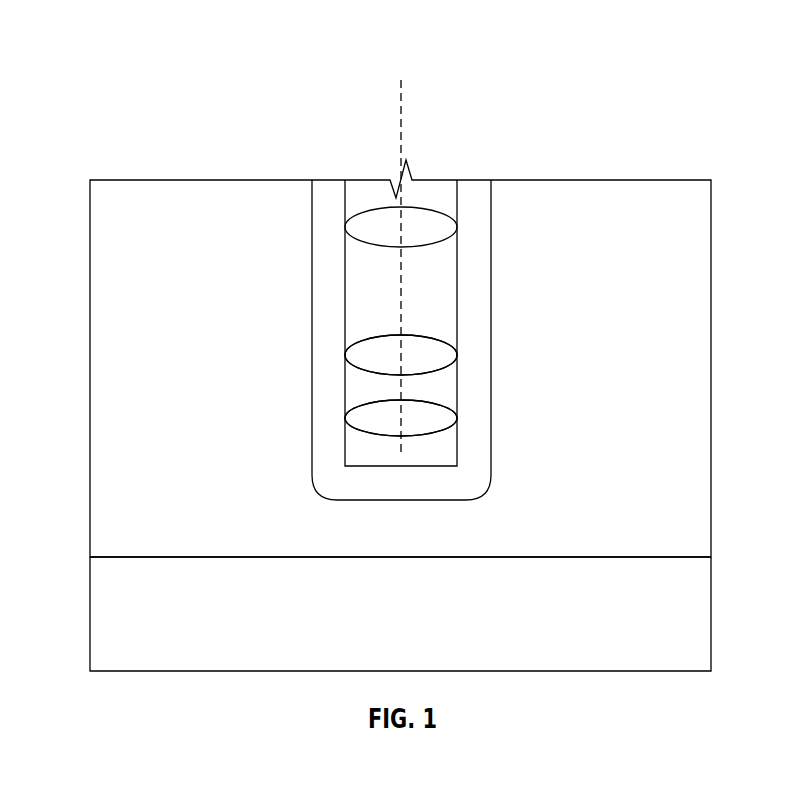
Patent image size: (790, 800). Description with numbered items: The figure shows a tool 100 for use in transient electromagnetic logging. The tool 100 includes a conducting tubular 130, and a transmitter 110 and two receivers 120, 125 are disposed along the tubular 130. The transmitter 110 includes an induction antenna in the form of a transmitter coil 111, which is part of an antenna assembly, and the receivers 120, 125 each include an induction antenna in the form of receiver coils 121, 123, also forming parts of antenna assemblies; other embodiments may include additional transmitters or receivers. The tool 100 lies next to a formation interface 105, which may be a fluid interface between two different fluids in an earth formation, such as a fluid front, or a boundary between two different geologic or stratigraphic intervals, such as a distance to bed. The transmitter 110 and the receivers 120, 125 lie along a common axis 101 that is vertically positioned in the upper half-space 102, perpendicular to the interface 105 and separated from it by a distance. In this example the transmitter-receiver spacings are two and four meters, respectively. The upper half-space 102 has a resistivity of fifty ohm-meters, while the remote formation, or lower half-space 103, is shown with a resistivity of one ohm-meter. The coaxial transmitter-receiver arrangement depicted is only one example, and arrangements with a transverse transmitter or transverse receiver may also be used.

The tool 100 is at (560, 207).
The common axis 101 is at (401, 122).
The upper half-space 102 is at (90, 472).
The remote formation (lower half-space) 103 is at (90, 614).
The formation interface 105 is at (138, 553).
The transmitter 110 is at (333, 228).
The transmitter coil 111 is at (457, 227).
The receiver 120 is at (333, 356).
The receiver coil 121 is at (457, 355).
The receiver coil 123 is at (457, 418).
The receiver 125 is at (345, 418).
The conducting tubular 130 is at (457, 277).